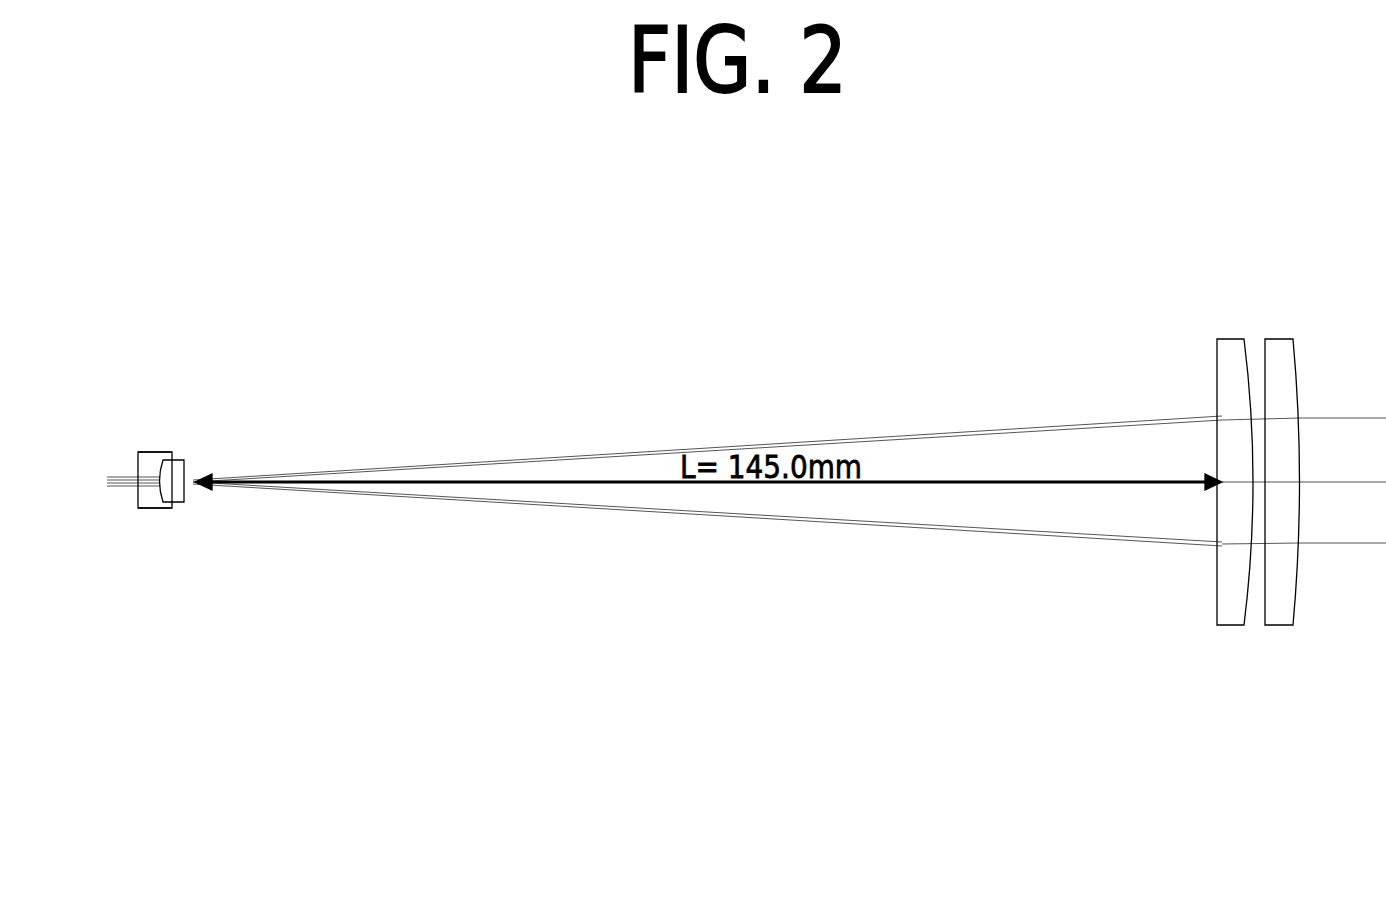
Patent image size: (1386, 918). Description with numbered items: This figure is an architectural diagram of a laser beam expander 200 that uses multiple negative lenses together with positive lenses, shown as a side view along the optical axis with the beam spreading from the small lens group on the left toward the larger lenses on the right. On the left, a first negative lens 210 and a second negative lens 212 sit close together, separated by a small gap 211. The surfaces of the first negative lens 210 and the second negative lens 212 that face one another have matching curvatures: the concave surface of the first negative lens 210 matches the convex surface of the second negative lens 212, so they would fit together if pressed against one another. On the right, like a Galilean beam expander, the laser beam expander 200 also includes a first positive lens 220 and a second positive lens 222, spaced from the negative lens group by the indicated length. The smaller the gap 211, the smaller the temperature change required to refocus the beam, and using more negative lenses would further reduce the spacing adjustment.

The laser beam expander 200 is at (240, 197).
The first negative lens 210 is at (153, 510).
The gap 211 is at (163, 465).
The second negative lens 212 is at (182, 502).
The first positive lens 220 is at (1226, 337).
The second positive lens 222 is at (1281, 337).